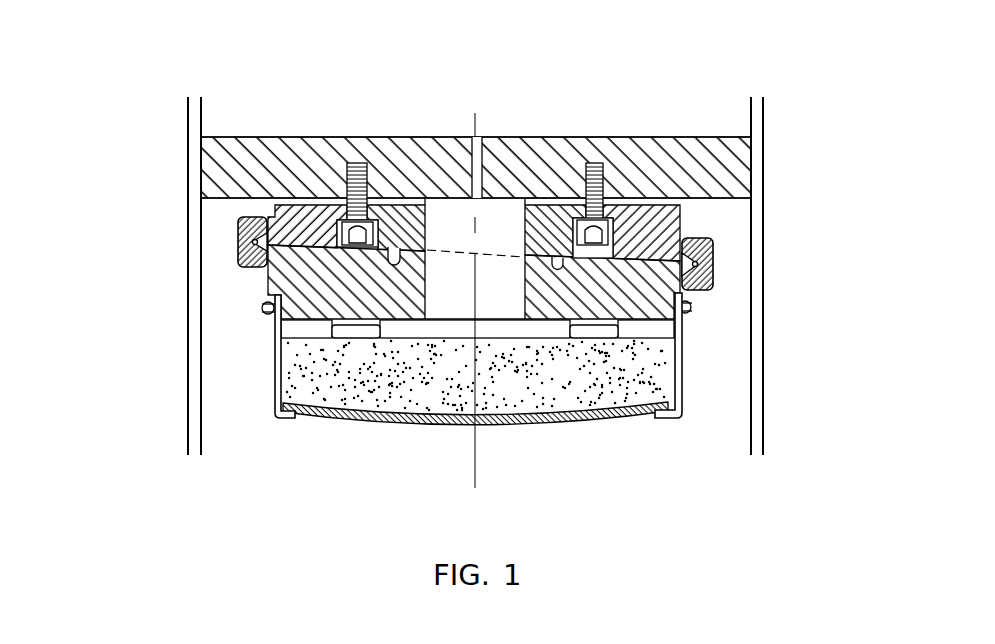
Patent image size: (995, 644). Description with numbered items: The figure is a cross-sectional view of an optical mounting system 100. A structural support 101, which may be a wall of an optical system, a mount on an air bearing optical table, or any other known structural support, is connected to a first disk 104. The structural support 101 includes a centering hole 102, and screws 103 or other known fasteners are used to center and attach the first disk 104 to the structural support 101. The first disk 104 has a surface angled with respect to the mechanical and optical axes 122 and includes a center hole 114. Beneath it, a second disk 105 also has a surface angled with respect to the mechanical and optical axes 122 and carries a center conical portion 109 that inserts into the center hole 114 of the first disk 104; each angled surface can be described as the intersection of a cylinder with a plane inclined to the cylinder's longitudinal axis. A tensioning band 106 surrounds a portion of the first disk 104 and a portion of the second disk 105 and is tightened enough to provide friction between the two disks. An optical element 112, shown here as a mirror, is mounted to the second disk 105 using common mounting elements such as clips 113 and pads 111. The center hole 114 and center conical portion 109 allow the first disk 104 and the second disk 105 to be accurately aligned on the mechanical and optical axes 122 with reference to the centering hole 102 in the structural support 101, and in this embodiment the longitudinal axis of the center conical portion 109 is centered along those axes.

The optical mounting system 100 is at (102, 29).
The structural support 101 is at (282, 136).
The centering hole 102 is at (470, 135).
The screws 103 is at (353, 163).
The first disk 104 is at (684, 217).
The second disk 105 is at (269, 282).
The tensioning band 106 is at (717, 250).
The center conical portion 109 is at (420, 221).
The pads 111 is at (354, 332).
The optical element 112 is at (554, 421).
The clips 113 is at (276, 424).
The center hole 114 is at (550, 255).
The mechanical and optical axes 122 is at (474, 473).